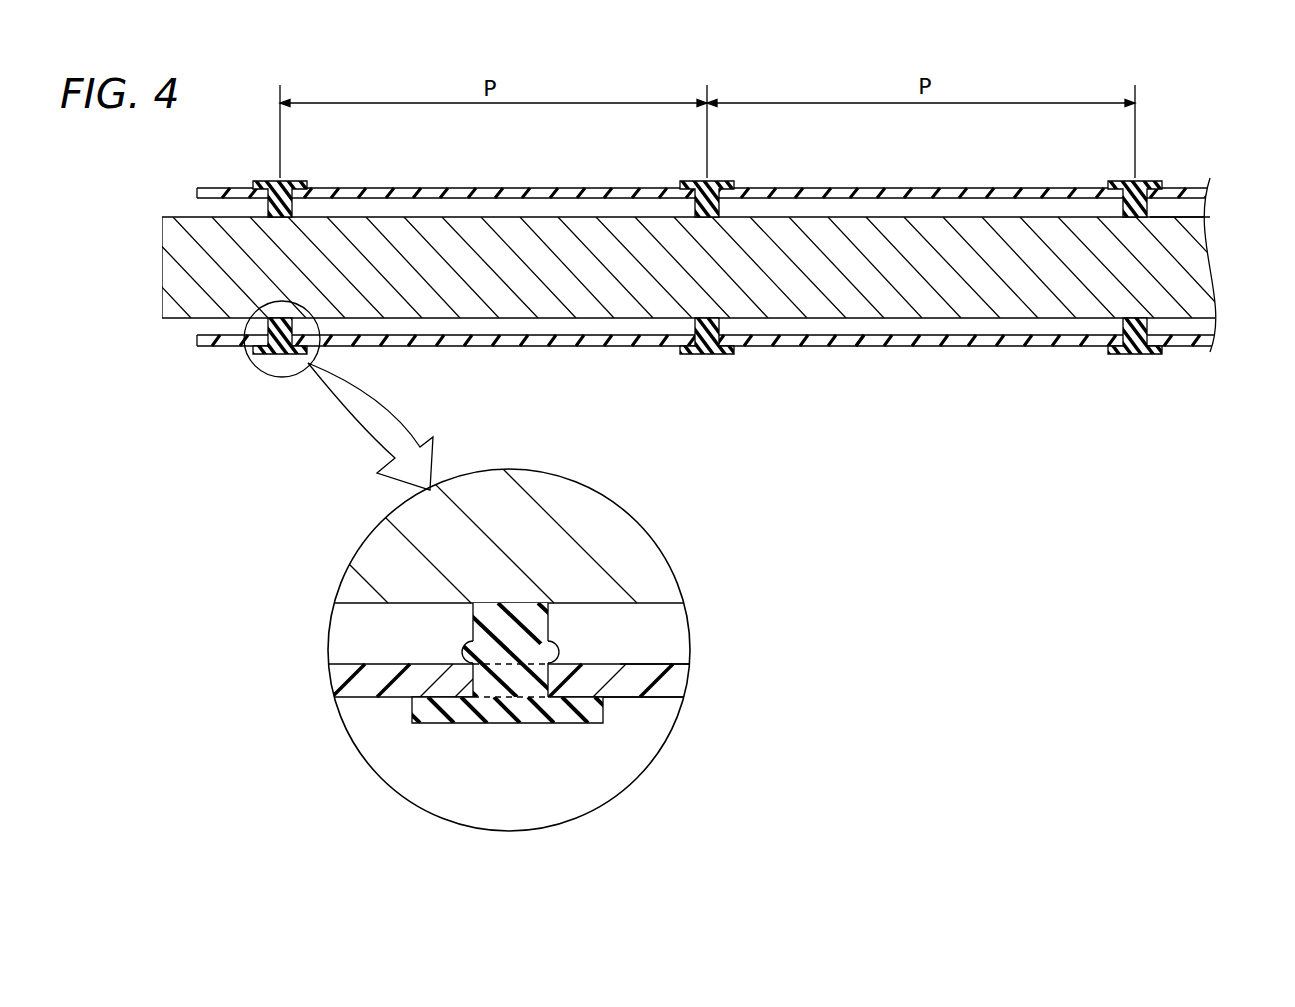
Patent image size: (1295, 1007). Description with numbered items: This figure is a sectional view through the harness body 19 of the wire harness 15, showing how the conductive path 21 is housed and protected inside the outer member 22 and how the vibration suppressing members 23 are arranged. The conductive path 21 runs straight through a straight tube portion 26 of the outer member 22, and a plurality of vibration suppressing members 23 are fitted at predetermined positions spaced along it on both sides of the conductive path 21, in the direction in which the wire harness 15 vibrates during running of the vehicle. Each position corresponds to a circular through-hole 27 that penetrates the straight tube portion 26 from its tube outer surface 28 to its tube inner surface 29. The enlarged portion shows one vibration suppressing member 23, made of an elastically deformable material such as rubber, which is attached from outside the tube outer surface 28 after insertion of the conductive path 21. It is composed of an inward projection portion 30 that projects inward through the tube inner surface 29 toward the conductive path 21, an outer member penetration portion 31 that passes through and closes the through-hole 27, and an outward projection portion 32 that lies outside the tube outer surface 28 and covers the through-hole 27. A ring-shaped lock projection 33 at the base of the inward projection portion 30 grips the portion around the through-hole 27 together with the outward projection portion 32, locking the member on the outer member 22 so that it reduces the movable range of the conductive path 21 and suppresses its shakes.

The wire harness 15 is at (1215, 115).
The harness body 19 is at (1232, 160).
The conductive path 21 is at (1193, 258).
The outer member 22 is at (965, 347).
The vibration suppressing member 23 is at (708, 489).
The straight tube portion 26 is at (865, 341).
The through-hole 27 is at (558, 654).
The tube outer surface 28 is at (653, 698).
The tube inner surface 29 is at (662, 664).
The inward projection portion 30 is at (537, 625).
The outer member penetration portion 31 is at (518, 683).
The outward projection portion 32 is at (475, 713).
The lock projection 33 is at (557, 653).